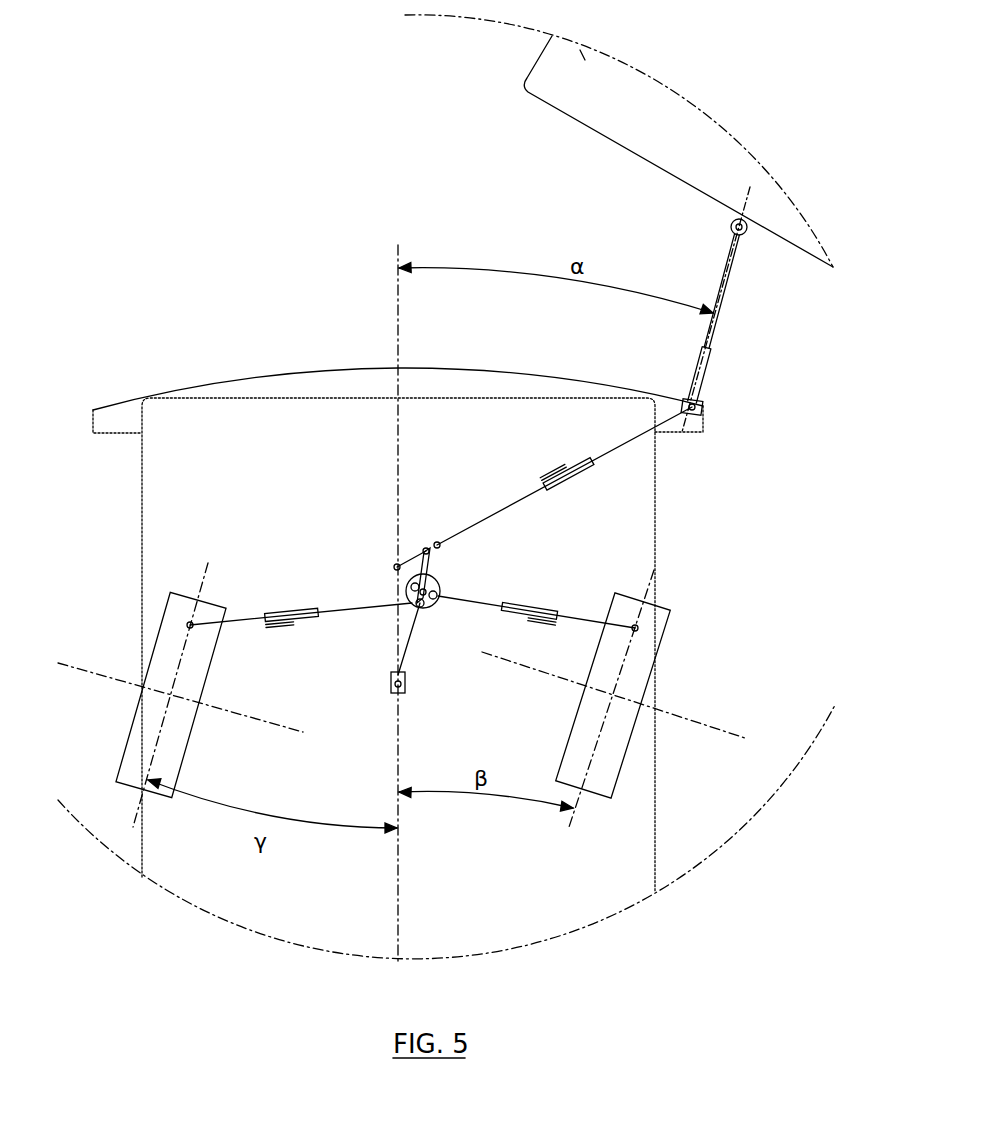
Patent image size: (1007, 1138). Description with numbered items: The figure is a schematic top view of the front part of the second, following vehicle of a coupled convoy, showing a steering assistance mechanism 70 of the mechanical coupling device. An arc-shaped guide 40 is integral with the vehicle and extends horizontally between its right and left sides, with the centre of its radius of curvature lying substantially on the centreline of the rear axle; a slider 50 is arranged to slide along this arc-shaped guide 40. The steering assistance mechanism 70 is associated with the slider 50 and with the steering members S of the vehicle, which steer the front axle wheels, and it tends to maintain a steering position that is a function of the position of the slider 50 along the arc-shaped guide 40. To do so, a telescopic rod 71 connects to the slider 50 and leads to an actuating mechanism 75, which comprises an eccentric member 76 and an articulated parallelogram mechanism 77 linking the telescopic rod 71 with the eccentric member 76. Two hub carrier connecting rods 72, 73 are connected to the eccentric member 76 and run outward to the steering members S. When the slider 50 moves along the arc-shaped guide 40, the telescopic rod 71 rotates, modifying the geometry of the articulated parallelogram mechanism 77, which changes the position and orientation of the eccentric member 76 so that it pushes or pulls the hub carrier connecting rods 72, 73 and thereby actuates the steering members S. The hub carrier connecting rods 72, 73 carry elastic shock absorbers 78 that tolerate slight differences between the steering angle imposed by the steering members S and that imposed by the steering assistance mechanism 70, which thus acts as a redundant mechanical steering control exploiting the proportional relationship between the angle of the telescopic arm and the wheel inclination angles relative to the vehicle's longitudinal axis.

The arc-shaped guide 40 is at (477, 382).
The slider 50 is at (700, 405).
The steering assistance mechanism 70 is at (730, 480).
The telescopic rod 71 is at (512, 495).
The hub carrier connecting rod 72 is at (320, 600).
The hub carrier connecting rod 73 is at (570, 607).
The actuating mechanism 75 is at (457, 657).
The eccentric member 76 is at (438, 588).
The articulated parallelogram mechanism 77 is at (417, 560).
The elastic shock absorber 78 is at (285, 625).
The steering members S is at (178, 665).